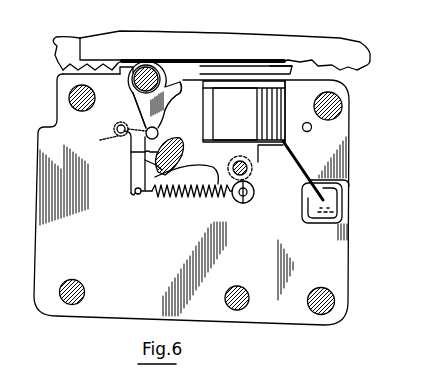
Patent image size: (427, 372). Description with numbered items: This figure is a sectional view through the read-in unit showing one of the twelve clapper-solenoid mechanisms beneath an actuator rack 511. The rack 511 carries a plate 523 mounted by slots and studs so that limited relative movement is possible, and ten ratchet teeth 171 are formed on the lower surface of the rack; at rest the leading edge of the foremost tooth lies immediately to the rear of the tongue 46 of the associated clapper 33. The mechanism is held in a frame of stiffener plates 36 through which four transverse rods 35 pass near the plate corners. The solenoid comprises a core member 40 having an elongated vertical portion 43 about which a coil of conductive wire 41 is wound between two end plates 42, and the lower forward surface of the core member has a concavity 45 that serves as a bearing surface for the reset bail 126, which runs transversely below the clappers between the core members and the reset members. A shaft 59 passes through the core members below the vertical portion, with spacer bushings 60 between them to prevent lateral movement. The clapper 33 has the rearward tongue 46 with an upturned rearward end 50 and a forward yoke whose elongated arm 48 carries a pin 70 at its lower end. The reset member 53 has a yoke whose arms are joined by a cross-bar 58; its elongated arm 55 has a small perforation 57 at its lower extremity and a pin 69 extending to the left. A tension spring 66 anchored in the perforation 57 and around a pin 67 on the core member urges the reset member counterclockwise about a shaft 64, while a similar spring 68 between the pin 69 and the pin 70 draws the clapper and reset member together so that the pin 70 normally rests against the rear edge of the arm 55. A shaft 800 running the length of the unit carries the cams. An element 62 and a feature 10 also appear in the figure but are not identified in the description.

The toothed edge of cover 10 is at (58, 71).
The clapper 33 is at (190, 105).
The transverse rods 35 is at (69, 100).
The stiffener plates 36 is at (151, 262).
The core member 40 is at (259, 158).
The coil of conductive wire 41 is at (281, 118).
The end plates 42 is at (285, 87).
The elongated vertical portion 43 is at (249, 88).
The concavity 45 is at (186, 160).
The tongue 46 is at (242, 72).
The arm 48 is at (136, 105).
The upturned rearward end 50 is at (281, 72).
The reset member 53 is at (133, 188).
The arm 55 is at (132, 153).
The perforation 57 is at (135, 193).
The cross-bar 58 is at (123, 86).
The shaft 59 is at (251, 174).
The spacer bushings 60 is at (254, 194).
The pivot 62 is at (147, 65).
The shaft 64 is at (164, 68).
The tension spring 66 is at (182, 197).
The pin 67 is at (243, 204).
The spring 68 is at (118, 126).
The pin 69 is at (100, 138).
The pin 70 is at (160, 131).
The reset bail 126 is at (140, 163).
The ratchet teeth 171 is at (350, 69).
The actuator rack 511 is at (128, 44).
The plate 523 is at (58, 42).
The shaft 800 is at (250, 291).